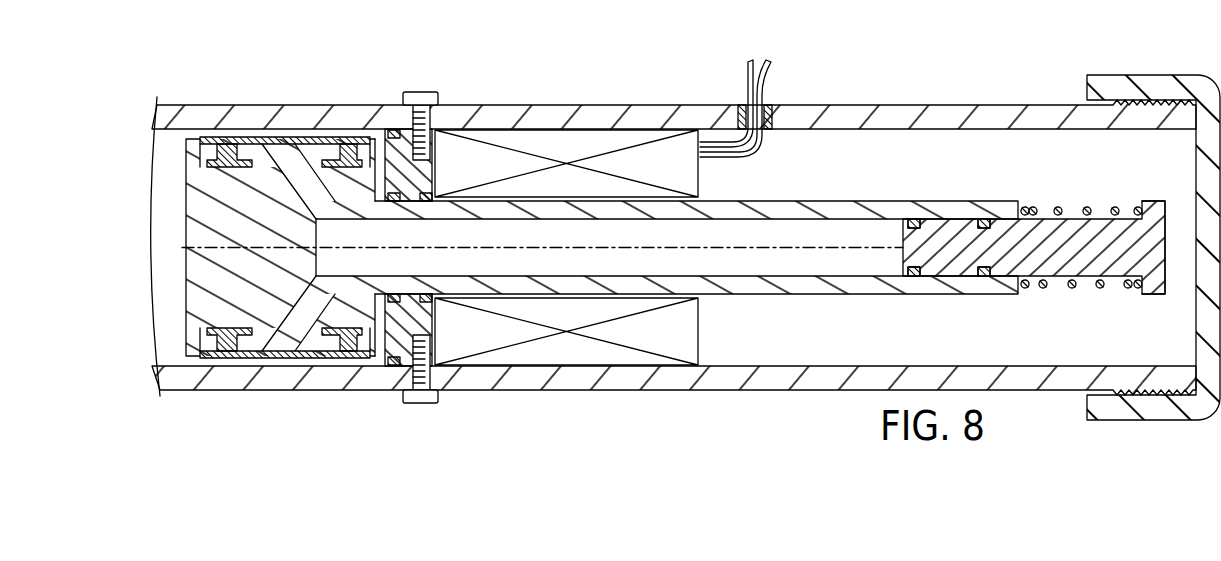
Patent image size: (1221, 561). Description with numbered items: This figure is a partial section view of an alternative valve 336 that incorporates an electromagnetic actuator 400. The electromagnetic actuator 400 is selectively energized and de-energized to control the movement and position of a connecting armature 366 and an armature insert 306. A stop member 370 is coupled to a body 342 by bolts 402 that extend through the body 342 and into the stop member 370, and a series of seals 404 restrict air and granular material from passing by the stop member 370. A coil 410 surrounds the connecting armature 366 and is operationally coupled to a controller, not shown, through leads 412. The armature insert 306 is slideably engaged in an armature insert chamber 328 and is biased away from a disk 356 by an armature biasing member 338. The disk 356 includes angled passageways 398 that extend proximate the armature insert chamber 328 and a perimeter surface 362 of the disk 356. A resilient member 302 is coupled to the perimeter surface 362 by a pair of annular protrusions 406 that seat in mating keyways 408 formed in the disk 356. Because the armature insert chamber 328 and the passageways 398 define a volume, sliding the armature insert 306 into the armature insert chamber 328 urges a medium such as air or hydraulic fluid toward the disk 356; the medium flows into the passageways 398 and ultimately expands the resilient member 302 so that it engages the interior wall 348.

The resilient member 302 is at (244, 134).
The armature insert 306 is at (1149, 198).
The armature insert chamber 328 is at (685, 275).
The valve 336 is at (176, 73).
The armature biasing member 338 is at (1128, 290).
The body 342 is at (951, 99).
The interior wall 348 is at (172, 131).
The disk 356 is at (183, 259).
The perimeter surface 362 is at (250, 167).
The connecting armature 366 is at (860, 191).
The stop member 370 is at (372, 369).
The angled passageways 398 is at (318, 292).
The electromagnetic actuator 400 is at (608, 98).
The bolts 402 is at (422, 93).
The seals 404 is at (395, 127).
The annular protrusions 406 is at (220, 355).
The keyways 408 is at (210, 330).
The coil 410 is at (700, 338).
The leads 412 is at (766, 74).